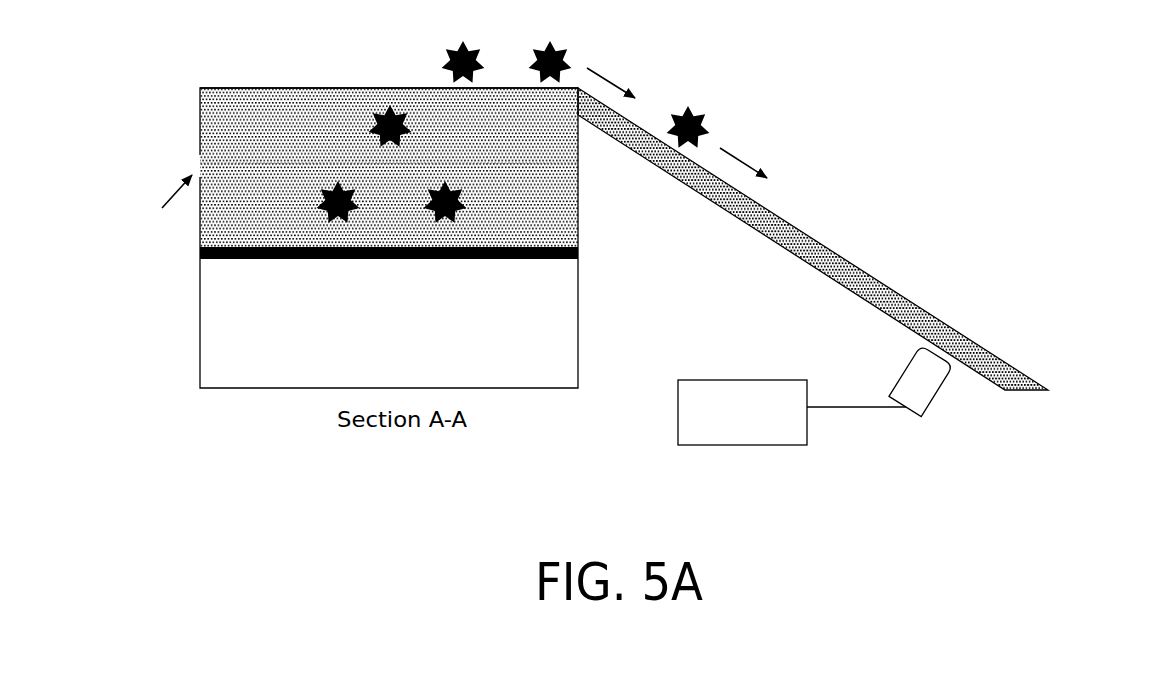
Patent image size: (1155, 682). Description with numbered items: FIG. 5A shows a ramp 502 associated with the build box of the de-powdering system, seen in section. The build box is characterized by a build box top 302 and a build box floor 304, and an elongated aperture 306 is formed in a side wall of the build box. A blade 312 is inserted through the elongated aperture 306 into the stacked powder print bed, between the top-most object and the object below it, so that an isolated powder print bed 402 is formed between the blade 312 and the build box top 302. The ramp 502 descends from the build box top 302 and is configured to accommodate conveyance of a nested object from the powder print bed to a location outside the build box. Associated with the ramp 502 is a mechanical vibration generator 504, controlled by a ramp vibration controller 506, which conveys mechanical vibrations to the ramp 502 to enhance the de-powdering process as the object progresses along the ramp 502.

The build box top 302 is at (220, 87).
The build box floor 304 is at (228, 344).
The elongated aperture 306 is at (160, 208).
The blade 312 is at (563, 162).
The isolated powder print bed 402 is at (227, 127).
The ramp 502 is at (1007, 372).
The mechanical vibration generator 504 is at (923, 388).
The ramp vibration controller 506 is at (795, 433).